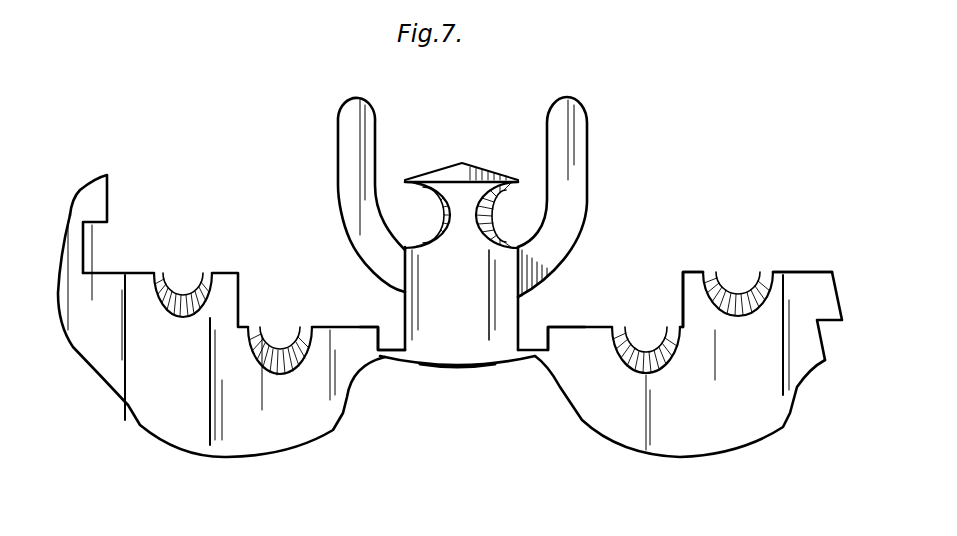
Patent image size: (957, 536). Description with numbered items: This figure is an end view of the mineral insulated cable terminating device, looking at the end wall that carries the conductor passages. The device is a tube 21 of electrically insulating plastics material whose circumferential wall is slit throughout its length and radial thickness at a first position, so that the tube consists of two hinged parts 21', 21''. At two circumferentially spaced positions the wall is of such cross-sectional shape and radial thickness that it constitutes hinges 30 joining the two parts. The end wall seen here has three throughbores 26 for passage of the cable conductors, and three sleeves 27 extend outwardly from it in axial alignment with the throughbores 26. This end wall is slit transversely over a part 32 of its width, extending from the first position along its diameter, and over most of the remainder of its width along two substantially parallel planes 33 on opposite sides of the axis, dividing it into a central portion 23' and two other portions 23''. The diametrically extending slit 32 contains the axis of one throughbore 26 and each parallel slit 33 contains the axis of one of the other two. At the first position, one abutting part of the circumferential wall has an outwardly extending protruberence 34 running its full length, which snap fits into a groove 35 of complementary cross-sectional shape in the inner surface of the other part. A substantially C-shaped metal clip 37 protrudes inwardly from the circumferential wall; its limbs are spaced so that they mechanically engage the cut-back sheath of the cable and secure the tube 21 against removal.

The tube 21 is at (440, 363).
The hinged part 21' is at (216, 336).
The hinged part 21'' is at (680, 432).
The central portion of end wall 23' is at (428, 224).
The other portions of end wall 23'' is at (500, 291).
The throughbore 26 is at (273, 332).
The sleeve 27 is at (175, 287).
The hinge 30 is at (386, 358).
The diametrically extending slit 32 is at (787, 271).
The parallel slit 33 is at (360, 327).
The protruberence 34 is at (823, 293).
The groove 35 is at (88, 240).
The metal clip 37 is at (578, 158).